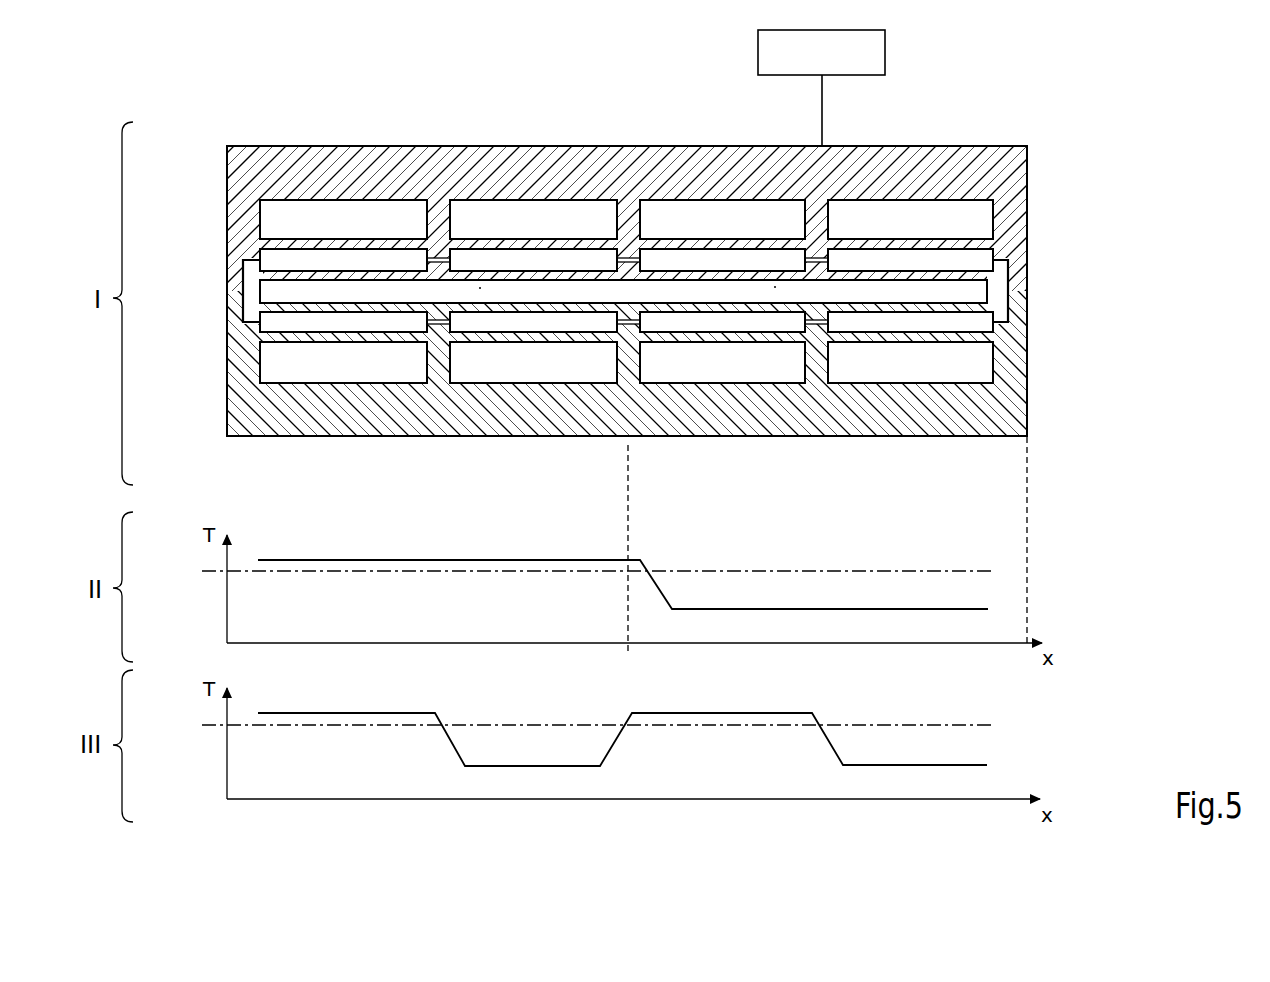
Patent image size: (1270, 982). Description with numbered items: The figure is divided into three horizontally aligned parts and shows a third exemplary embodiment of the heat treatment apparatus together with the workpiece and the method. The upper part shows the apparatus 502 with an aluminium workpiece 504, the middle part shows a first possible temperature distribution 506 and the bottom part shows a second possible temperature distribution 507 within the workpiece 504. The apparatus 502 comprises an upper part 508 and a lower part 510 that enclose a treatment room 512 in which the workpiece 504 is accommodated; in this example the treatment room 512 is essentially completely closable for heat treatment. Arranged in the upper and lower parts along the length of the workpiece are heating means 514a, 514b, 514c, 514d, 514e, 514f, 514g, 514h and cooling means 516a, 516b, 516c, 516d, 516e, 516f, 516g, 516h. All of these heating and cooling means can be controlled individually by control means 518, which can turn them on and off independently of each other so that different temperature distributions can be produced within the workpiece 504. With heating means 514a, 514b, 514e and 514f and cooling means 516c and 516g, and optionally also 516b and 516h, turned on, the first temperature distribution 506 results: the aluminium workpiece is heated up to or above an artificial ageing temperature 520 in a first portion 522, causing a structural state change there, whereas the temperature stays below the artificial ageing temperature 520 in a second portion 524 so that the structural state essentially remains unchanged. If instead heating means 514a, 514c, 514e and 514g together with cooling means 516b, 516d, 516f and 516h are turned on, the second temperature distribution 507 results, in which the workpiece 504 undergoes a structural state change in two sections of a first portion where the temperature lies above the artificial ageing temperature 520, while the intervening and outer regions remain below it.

The apparatus 502 is at (1053, 120).
The aluminium workpiece 504 is at (272, 292).
The first possible temperature distribution 506 is at (1057, 572).
The second possible temperature distribution 507 is at (1058, 742).
The upper part 508 is at (254, 162).
The lower part 510 is at (250, 425).
The treatment room 512 is at (253, 283).
The heating means 514a is at (333, 221).
The heating means 514b is at (523, 221).
The heating means 514c is at (712, 221).
The heating means 514d is at (902, 221).
The heating means 514e is at (332, 362).
The heating means 514f is at (523, 362).
The heating means 514g is at (693, 362).
The heating means 514h is at (901, 362).
The cooling means 516a is at (368, 259).
The cooling means 516b is at (559, 259).
The cooling means 516c is at (748, 259).
The cooling means 516d is at (938, 259).
The cooling means 516e is at (368, 322).
The cooling means 516f is at (560, 322).
The cooling means 516g is at (728, 322).
The cooling means 516h is at (937, 322).
The control means 518 is at (840, 66).
The artificial ageing temperature 520 is at (217, 571).
The first portion 522 is at (480, 288).
The second portion 524 is at (775, 287).